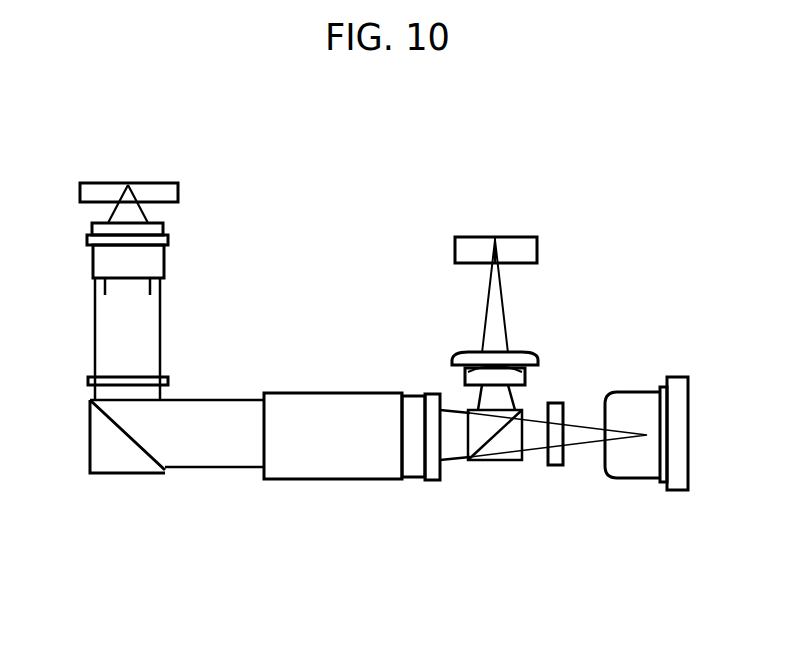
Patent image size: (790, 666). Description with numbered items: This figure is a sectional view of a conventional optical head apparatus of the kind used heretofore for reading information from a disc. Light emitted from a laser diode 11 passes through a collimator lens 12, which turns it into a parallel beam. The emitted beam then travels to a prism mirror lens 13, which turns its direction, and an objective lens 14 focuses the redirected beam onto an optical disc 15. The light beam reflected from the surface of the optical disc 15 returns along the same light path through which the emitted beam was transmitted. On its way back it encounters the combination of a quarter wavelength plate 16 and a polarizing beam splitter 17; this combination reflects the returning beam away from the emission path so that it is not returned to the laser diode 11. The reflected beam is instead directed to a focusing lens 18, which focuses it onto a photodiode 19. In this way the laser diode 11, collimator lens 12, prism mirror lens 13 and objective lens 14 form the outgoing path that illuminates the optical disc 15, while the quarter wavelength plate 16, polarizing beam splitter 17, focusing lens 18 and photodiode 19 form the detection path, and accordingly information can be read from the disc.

The laser diode 11 is at (677, 407).
The collimator lens 12 is at (322, 402).
The prism mirror lens 13 is at (105, 463).
The objective lens 14 is at (158, 262).
The optical disc 15 is at (155, 188).
The quarter wavelength plate 16 is at (168, 380).
The polarizing beam splitter 17 is at (503, 460).
The focusing lens 18 is at (532, 360).
The photodiode 19 is at (528, 252).